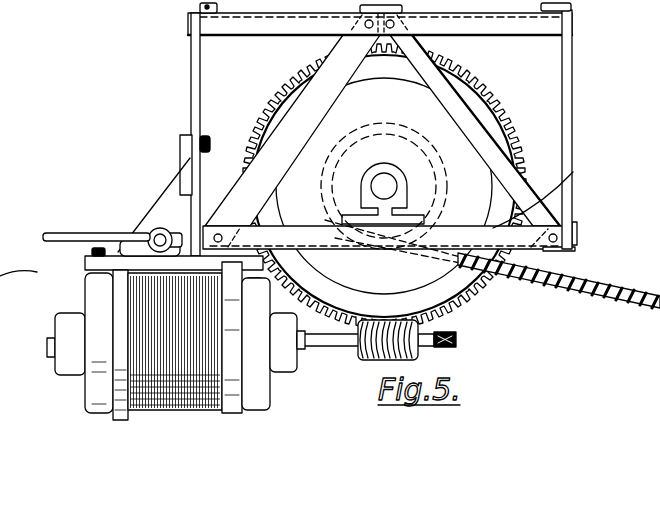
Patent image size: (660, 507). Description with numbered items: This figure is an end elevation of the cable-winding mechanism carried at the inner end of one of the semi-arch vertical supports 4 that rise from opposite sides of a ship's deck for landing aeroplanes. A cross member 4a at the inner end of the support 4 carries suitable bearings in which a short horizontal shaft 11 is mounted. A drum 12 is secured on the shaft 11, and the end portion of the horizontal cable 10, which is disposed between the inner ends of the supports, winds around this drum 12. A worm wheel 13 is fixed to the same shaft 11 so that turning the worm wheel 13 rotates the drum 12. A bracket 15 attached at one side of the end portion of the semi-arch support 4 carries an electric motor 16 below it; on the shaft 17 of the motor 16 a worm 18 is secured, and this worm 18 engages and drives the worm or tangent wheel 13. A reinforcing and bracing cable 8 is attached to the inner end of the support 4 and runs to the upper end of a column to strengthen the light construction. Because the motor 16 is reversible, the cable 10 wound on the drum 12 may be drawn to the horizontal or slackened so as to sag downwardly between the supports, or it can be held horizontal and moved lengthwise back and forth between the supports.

The vertical support 4 is at (417, 38).
The cross member 4a is at (552, 178).
The reinforcing and bracing cable 8 is at (53, 233).
The cable 10 is at (558, 282).
The short horizontal shaft 11 is at (388, 183).
The drum 12 is at (443, 182).
The worm wheel 13 is at (495, 100).
The bracket 15 is at (178, 196).
The electric motor 16 is at (193, 377).
The motor shaft 17 is at (322, 348).
The worm 18 is at (370, 353).